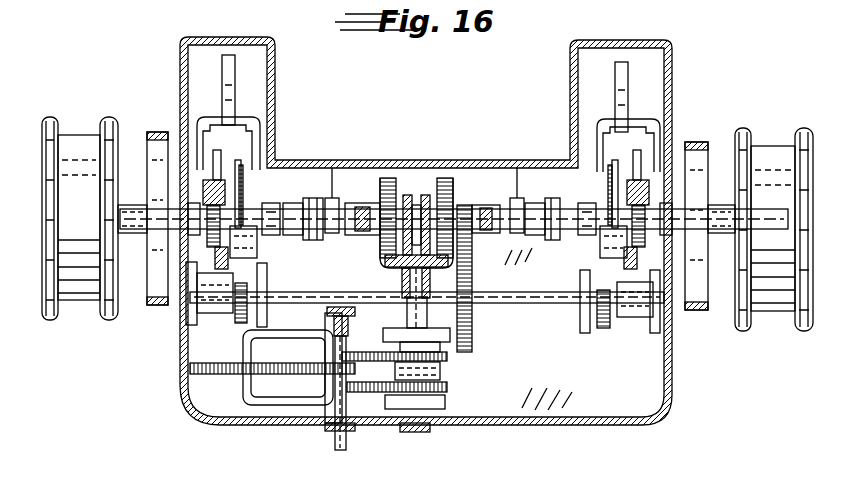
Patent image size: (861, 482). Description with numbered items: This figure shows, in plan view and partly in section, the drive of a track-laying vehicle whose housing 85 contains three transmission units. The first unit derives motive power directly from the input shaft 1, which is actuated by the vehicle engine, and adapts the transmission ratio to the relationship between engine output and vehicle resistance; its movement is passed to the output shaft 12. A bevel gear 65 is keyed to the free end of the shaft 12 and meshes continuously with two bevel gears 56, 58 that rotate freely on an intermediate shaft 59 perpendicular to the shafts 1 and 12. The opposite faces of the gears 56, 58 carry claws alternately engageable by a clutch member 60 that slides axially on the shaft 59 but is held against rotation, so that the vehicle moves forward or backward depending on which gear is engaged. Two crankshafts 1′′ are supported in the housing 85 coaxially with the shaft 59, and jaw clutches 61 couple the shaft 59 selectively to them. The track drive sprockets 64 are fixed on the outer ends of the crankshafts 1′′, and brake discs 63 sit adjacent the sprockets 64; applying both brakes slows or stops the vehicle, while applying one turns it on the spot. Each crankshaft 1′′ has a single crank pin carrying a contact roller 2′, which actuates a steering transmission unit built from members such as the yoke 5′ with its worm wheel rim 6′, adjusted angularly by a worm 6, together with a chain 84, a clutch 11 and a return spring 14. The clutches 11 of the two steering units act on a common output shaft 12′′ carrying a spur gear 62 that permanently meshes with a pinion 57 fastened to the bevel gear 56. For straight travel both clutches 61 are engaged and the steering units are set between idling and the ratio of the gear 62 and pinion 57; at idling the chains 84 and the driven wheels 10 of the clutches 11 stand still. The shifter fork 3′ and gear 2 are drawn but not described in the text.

The input shaft 1 is at (333, 442).
The crankshaft 1′′ is at (300, 210).
The gear 2 is at (295, 212).
The contact roller 2′ is at (230, 248).
The shifter fork 3′ is at (213, 150).
The yoke 5′ is at (258, 133).
The worm 6 is at (240, 182).
The worm wheel rim 6′ is at (230, 87).
The driven wheel 10 is at (200, 327).
The clutch 11 is at (218, 318).
The output shaft 12 is at (410, 314).
The common output shaft 12′′ is at (320, 296).
The return spring 14 is at (190, 318).
The bevel gear 56 is at (445, 180).
The pinion 57 is at (465, 212).
The bevel gear 58 is at (388, 178).
The intermediate shaft 59 is at (358, 217).
The clutch member 60 is at (413, 195).
The jaw clutch 61 is at (333, 200).
The spur gear 62 is at (470, 335).
The brake disc 63 is at (157, 132).
The track drive sprocket 64 is at (84, 147).
The bevel gear 65 is at (392, 265).
The chain 84 is at (240, 320).
The housing 85 is at (630, 426).